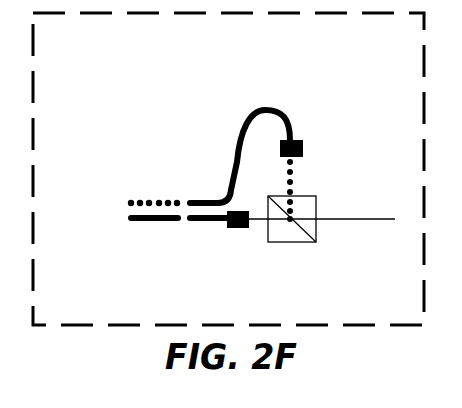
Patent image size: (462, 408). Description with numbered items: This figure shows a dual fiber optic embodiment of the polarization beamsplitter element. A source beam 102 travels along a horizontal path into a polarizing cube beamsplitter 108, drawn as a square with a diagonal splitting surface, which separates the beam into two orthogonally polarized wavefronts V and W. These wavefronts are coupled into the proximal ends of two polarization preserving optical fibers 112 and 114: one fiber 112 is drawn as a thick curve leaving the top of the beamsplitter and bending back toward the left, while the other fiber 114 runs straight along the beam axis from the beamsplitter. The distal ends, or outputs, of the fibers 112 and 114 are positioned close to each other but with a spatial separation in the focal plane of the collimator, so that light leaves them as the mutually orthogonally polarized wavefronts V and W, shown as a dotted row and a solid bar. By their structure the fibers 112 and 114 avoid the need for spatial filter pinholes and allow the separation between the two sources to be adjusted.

The source beam 102 is at (365, 235).
The polarizing cube beamsplitter 108 is at (318, 182).
The polarization preserving optical fiber 112 is at (202, 187).
The polarization preserving optical fiber 114 is at (205, 231).
The orthogonally polarized wavefront V is at (131, 190).
The orthogonally polarized wavefront W is at (127, 236).